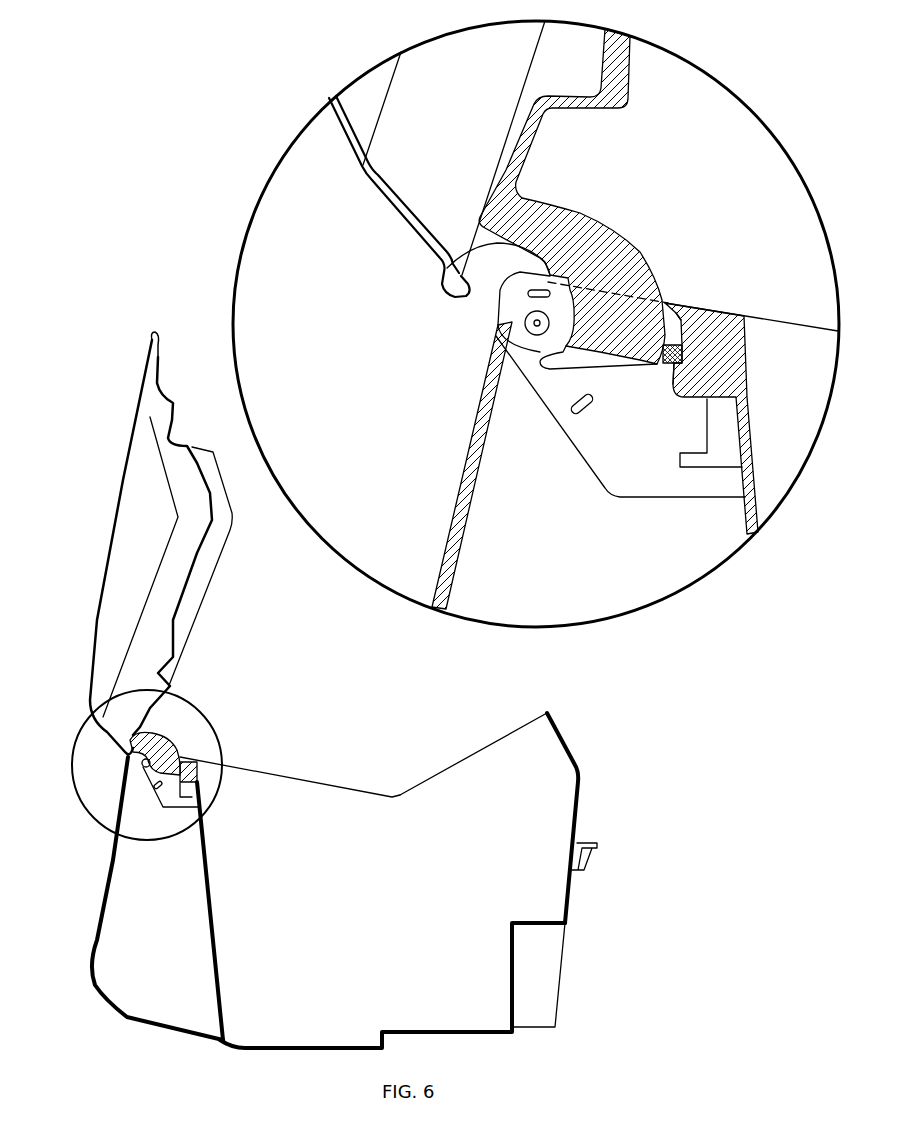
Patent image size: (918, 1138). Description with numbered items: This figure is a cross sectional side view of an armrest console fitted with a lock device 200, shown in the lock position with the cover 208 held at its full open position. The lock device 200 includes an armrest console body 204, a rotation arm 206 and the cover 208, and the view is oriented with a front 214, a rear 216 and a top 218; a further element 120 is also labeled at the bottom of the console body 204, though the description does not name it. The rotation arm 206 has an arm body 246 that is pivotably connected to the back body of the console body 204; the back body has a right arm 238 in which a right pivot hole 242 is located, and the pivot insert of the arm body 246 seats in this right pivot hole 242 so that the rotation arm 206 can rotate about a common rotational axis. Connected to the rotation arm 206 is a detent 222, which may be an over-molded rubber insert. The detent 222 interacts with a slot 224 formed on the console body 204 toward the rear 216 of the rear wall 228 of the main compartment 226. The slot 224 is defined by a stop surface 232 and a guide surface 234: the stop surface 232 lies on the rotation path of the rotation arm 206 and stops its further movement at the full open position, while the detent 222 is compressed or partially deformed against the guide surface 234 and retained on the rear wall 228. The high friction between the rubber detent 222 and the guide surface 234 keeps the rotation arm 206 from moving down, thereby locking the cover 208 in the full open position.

The lock device 200 is at (192, 48).
The cover 208 is at (130, 482).
The rotation arm 206 is at (527, 202).
The arm body 246 is at (613, 247).
The right pivot hole 242 is at (526, 326).
The right arm 238 is at (583, 437).
The slot 224 is at (715, 360).
The detent 222 is at (664, 367).
The stop surface 232 is at (677, 312).
The guide surface 234 is at (678, 380).
The rear wall 228 is at (222, 767).
The armrest console body 204 is at (498, 810).
The rear 216 is at (100, 912).
The main compartment 226 is at (320, 790).
The top 218 is at (473, 752).
The front 214 is at (568, 893).
The bottom wall 120 is at (448, 1040).